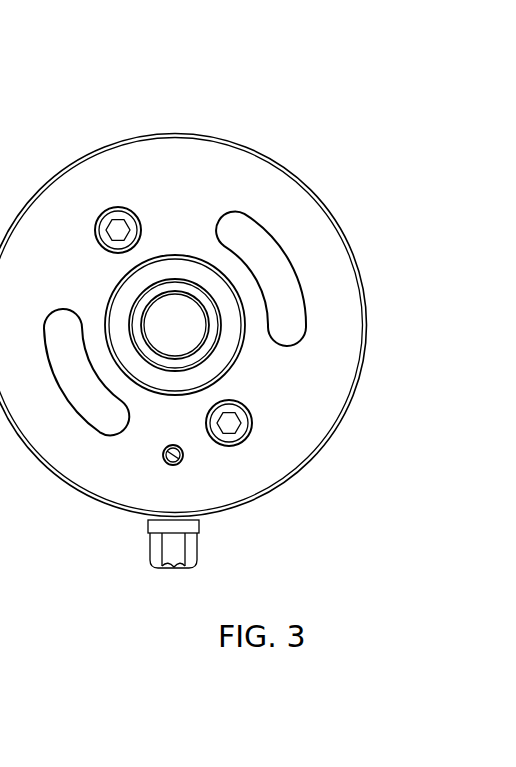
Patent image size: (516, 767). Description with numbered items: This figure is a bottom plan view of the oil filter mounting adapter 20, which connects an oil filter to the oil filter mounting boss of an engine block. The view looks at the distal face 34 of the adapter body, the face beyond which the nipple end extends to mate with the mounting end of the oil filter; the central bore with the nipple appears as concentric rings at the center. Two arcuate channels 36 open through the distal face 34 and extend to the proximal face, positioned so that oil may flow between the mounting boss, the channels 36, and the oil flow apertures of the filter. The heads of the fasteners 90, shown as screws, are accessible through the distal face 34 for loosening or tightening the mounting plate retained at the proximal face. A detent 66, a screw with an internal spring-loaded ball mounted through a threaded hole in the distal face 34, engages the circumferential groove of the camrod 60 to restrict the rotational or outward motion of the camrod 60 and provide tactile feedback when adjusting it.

The oil filter mounting adapter 20 is at (184, 292).
The distal face 34 is at (195, 205).
The channels 36 is at (92, 390).
The camrod 60 is at (0, 127).
The detent 66 is at (168, 466).
The fasteners 90 is at (117, 208).